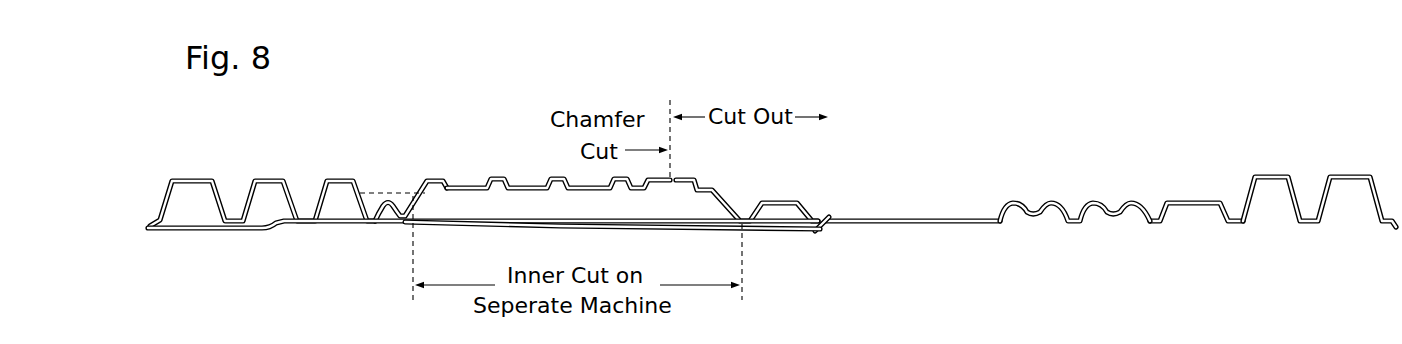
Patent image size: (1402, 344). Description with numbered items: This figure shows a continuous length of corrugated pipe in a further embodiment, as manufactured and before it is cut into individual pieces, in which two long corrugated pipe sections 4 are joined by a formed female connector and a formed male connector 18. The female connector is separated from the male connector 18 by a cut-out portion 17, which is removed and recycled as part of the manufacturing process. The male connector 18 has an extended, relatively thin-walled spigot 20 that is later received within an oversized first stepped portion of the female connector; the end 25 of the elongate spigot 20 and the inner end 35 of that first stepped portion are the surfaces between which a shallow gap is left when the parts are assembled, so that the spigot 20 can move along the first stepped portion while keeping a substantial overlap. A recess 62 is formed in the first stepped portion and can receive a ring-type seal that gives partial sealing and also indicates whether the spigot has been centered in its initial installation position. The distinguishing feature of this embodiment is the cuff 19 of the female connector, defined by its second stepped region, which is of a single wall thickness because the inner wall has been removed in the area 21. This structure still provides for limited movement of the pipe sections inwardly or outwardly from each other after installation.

The corrugated pipe section 4 is at (1315, 160).
The cut-out portion 17 is at (737, 191).
The male connector 18 is at (1077, 170).
The cuff 19 is at (537, 178).
The spigot 20 is at (898, 230).
The area 21 is at (657, 238).
The end of the spigot 25 is at (830, 96).
The inner end of the first stepped portion 35 is at (237, 218).
The recess 62 is at (381, 199).